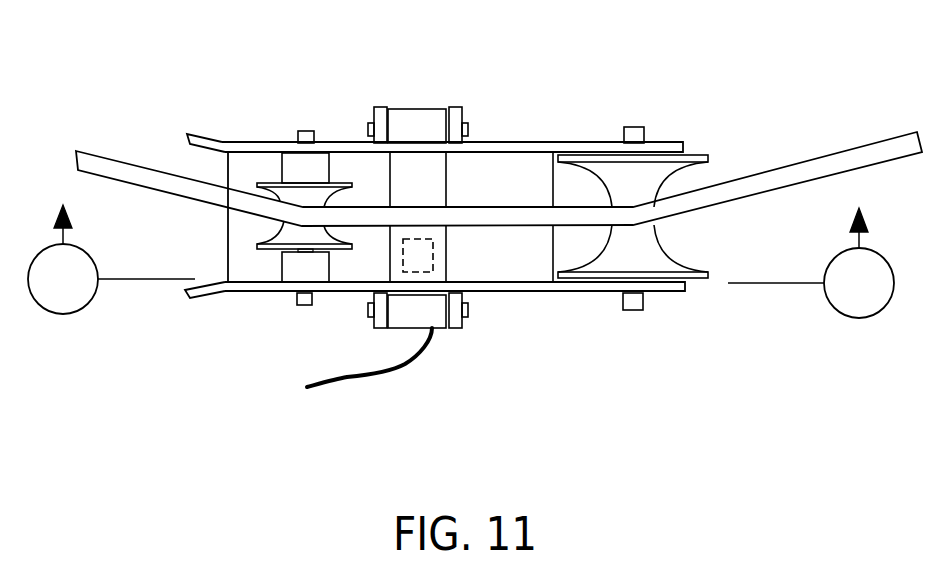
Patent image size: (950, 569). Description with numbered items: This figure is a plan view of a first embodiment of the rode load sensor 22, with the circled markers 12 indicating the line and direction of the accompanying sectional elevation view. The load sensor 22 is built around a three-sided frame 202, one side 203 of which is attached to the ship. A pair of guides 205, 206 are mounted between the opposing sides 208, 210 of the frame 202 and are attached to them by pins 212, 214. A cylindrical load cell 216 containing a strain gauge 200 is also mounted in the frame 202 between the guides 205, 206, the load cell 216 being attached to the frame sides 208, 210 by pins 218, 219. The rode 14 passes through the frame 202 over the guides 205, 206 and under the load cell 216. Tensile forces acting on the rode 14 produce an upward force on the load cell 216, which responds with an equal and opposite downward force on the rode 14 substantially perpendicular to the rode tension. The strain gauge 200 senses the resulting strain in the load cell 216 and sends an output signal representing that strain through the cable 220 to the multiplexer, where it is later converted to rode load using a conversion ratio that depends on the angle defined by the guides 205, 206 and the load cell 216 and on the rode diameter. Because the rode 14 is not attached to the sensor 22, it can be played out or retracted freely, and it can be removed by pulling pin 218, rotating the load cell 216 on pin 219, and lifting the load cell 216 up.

The sectional elevation view indicator 12 is at (461, 261).
The rode 14 is at (855, 157).
The rode load sensor 22 is at (194, 378).
The strain gauge 200 is at (419, 263).
The three-sided frame 202 is at (263, 147).
The frame side 203 is at (362, 255).
The guide 205 is at (343, 183).
The guide 206 is at (592, 160).
The frame side 208 is at (193, 138).
The frame side 210 is at (195, 295).
The pin 212 is at (308, 133).
The pin 214 is at (638, 133).
The cylindrical load cell 216 is at (417, 122).
The pin 218 is at (465, 125).
The pin 219 is at (465, 312).
The cable 220 is at (352, 382).